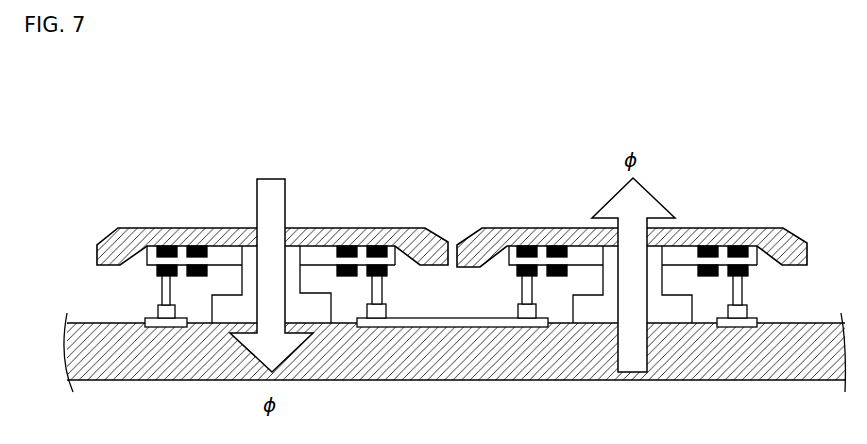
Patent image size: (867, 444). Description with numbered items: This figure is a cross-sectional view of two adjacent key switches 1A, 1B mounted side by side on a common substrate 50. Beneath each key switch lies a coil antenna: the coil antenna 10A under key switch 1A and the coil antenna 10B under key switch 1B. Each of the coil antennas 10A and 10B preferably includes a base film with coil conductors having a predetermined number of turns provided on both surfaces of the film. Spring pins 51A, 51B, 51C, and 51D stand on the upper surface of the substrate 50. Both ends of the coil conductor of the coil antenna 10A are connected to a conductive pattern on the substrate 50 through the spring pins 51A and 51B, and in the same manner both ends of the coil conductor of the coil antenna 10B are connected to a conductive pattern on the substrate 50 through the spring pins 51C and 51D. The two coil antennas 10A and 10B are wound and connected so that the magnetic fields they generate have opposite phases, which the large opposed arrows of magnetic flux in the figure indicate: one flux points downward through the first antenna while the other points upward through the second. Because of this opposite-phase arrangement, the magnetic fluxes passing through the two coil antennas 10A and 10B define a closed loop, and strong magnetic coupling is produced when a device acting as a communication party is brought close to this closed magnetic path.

The first vibration element / sensor unit 1A is at (348, 228).
The second vibration element / sensor unit 1B is at (725, 228).
The coil antenna 10A is at (147, 272).
The coil antenna 10B is at (759, 274).
The spring pin 51A is at (160, 292).
The spring pin 51B is at (383, 288).
The spring pin 51C is at (520, 289).
The spring pin 51D is at (745, 293).
The substrate 50 is at (787, 362).